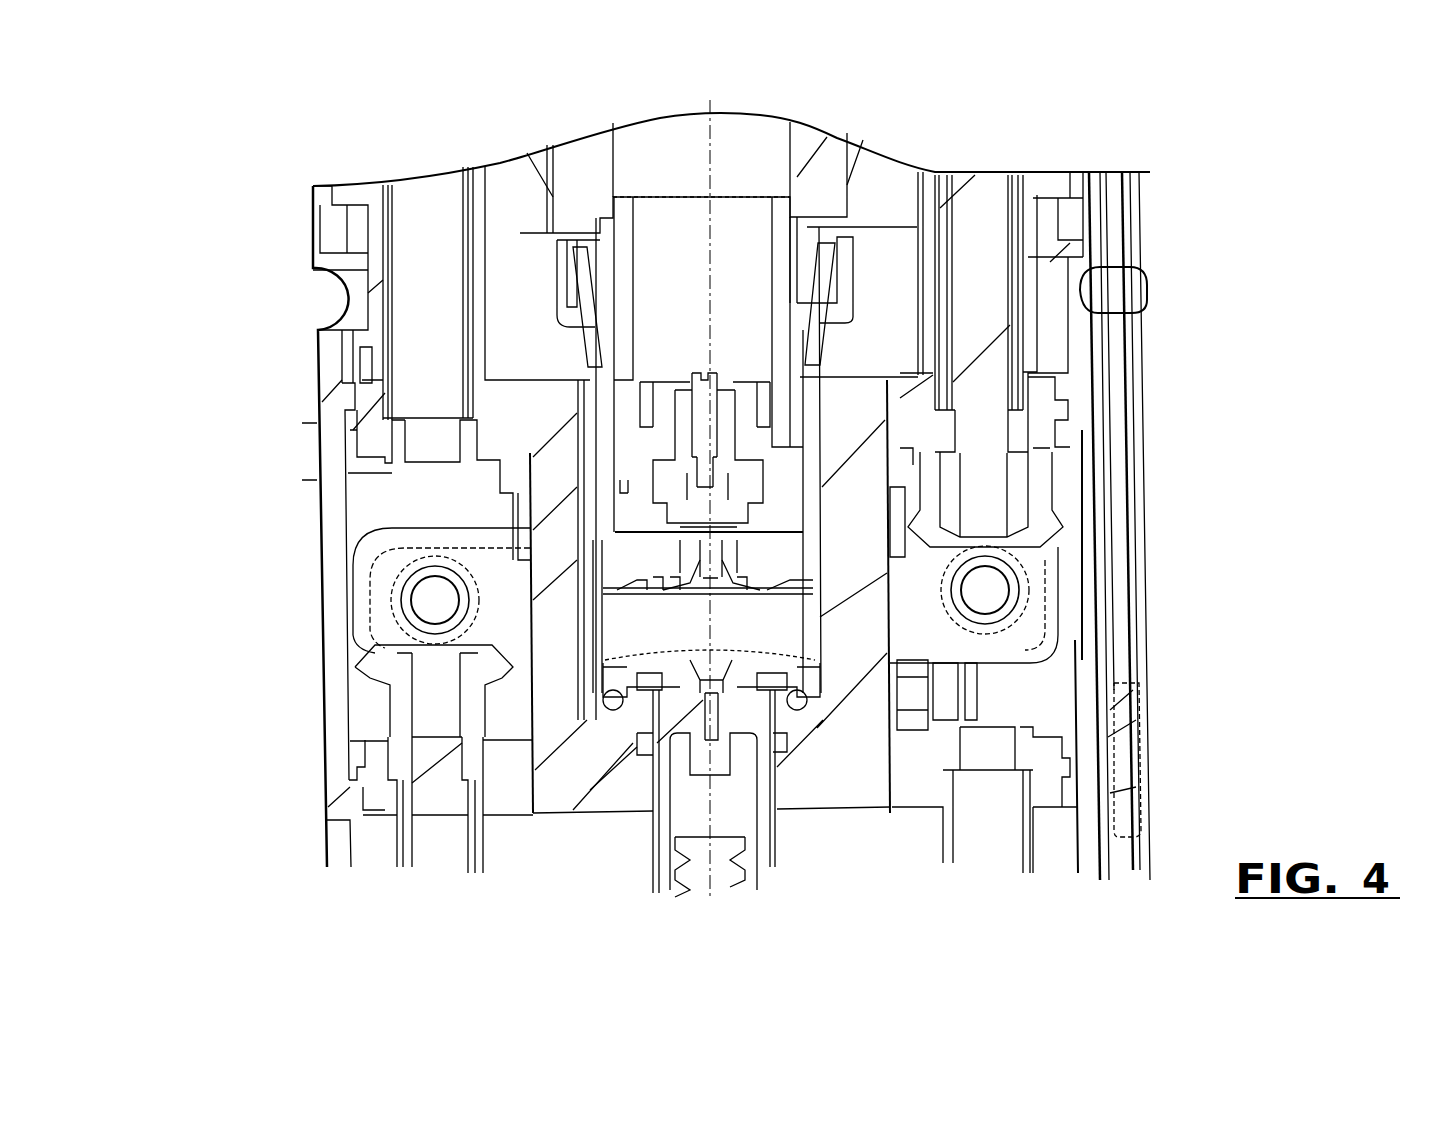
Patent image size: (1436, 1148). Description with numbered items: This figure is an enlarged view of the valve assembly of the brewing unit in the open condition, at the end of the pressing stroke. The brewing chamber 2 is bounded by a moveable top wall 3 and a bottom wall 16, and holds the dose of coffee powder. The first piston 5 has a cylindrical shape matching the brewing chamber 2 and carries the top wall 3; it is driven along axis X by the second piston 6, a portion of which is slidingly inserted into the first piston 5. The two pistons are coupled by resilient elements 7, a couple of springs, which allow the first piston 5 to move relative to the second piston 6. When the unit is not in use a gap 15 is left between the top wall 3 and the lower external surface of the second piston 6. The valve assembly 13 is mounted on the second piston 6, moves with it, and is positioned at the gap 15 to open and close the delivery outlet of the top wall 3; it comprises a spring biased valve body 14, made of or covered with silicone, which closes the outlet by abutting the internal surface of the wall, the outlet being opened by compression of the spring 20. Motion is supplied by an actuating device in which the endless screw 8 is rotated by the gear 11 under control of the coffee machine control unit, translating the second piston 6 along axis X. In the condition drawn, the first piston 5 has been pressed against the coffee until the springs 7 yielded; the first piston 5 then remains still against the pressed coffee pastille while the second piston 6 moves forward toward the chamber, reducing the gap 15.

The brewing chamber 2 is at (615, 578).
The top wall 3 is at (768, 560).
The first piston 5 is at (712, 698).
The second piston 6 is at (797, 177).
The resilient elements 7 is at (580, 283).
The endless screw 8 is at (983, 290).
The gear 11 is at (983, 597).
The valve assembly 13 is at (660, 448).
The valve body 14 is at (656, 620).
The gap 15 is at (777, 518).
The bottom wall 16 is at (600, 655).
The spring 20 is at (680, 380).